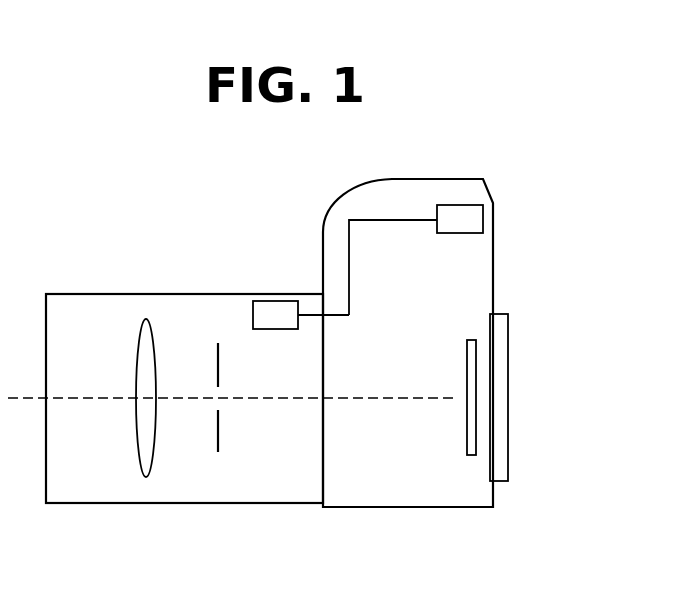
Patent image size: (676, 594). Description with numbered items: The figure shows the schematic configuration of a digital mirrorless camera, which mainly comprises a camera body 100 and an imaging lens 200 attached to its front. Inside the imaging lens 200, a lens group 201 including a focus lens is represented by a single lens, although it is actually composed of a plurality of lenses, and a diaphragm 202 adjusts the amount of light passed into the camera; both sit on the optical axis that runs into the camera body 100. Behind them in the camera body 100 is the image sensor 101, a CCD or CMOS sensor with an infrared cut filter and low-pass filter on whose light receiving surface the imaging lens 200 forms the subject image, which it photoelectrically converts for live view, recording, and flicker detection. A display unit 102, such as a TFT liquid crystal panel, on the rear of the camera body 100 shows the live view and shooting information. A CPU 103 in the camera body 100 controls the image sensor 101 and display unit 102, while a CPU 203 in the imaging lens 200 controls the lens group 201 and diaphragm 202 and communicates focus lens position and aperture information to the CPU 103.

The camera body 100 is at (356, 185).
The image sensor 101 is at (471, 455).
The display unit 102 is at (509, 407).
The CPU 103 is at (483, 218).
The imaging lens 200 is at (103, 294).
The lens group 201 is at (146, 477).
The diaphragm 202 is at (219, 445).
The CPU 203 is at (272, 301).